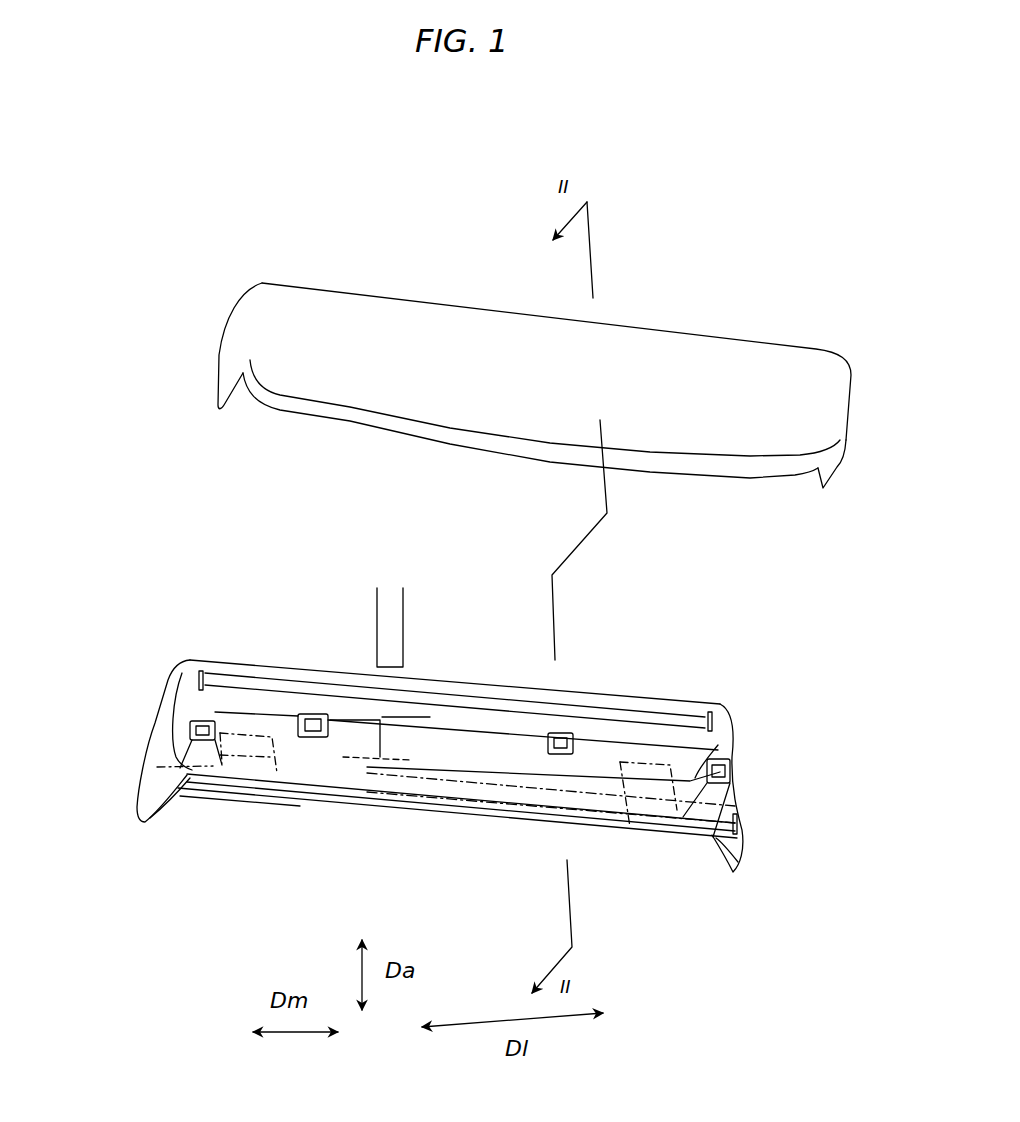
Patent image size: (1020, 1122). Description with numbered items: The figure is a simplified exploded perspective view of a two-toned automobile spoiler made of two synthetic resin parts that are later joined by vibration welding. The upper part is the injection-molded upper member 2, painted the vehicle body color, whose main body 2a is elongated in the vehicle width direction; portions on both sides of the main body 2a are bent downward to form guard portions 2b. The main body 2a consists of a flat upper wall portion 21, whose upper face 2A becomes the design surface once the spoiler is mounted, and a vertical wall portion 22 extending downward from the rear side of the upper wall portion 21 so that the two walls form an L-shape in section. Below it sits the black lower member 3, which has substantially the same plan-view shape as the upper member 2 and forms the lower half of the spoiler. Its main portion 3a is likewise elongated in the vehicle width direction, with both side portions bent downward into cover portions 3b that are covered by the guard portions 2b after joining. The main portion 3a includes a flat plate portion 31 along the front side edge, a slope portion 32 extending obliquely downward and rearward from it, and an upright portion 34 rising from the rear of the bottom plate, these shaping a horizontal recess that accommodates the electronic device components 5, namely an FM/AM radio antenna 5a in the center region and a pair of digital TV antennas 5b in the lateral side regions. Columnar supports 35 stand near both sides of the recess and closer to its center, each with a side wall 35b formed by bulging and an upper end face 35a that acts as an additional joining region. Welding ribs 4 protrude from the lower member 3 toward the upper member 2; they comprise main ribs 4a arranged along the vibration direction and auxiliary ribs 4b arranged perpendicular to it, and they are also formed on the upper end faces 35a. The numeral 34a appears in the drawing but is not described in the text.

The upper member 2 is at (519, 388).
The upper face 2A is at (478, 328).
The main body 2a is at (378, 327).
The upper wall portion 21 is at (556, 333).
The vertical wall portion 22 is at (693, 465).
The guard portions 2b is at (222, 380).
The lower member 3 is at (450, 741).
The main portion 3a is at (390, 627).
The cover portions 3b is at (140, 805).
The flat plate portion 31 is at (406, 634).
The slope portion 32 is at (410, 747).
The upright portion 34 is at (330, 854).
The front rail edge 34a is at (477, 808).
The columnar supports 35 is at (450, 737).
The upper end face 35a is at (317, 713).
The side wall 35b is at (187, 756).
The welding ribs 4 is at (448, 729).
The main ribs 4a is at (277, 675).
The auxiliary ribs 4b is at (200, 675).
The electronic device components 5 is at (457, 843).
The FM/AM radio antenna 5a is at (418, 812).
The digital TV antennas 5b is at (250, 793).